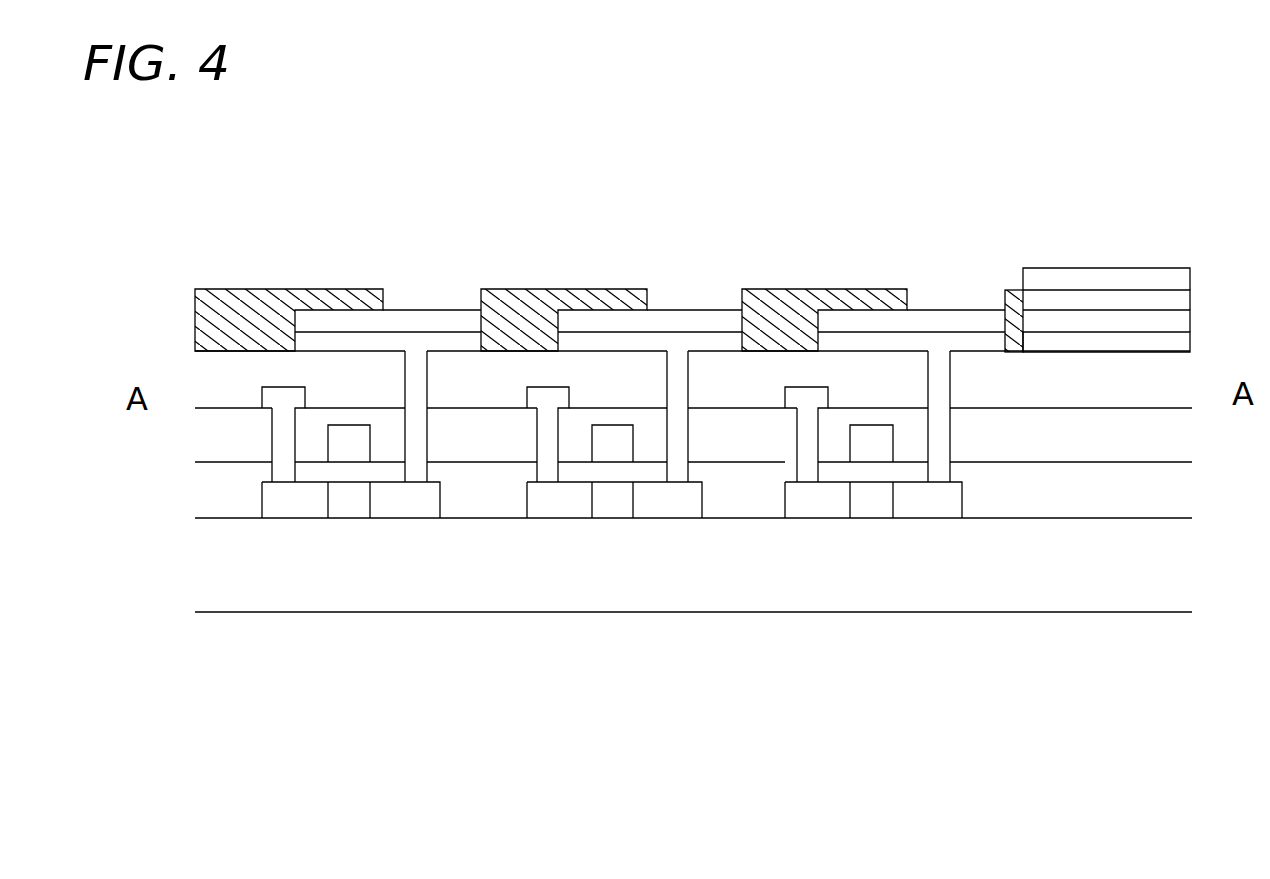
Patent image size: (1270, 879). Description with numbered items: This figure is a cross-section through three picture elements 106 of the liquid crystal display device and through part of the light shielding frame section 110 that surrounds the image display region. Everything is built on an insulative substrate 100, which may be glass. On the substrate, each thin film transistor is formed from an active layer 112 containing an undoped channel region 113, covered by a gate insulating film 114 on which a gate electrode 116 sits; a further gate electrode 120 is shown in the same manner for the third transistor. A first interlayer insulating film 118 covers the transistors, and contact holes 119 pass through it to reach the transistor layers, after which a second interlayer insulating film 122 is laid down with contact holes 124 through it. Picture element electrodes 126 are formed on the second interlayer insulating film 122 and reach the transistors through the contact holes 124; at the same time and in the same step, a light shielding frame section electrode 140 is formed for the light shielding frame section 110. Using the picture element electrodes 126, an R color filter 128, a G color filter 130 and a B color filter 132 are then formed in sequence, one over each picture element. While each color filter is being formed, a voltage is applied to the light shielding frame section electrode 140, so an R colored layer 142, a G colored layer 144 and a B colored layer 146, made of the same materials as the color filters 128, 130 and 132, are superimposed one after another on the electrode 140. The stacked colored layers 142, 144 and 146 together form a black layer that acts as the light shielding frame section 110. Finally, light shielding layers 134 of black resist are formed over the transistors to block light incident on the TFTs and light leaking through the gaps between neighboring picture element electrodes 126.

The insulative substrate 100 is at (867, 595).
The picture elements 106 is at (997, 162).
The light shielding frame section 110 is at (1005, 138).
The active layers 112 is at (408, 505).
The undoped channel regions 113 is at (352, 503).
The gate insulating films 114 is at (577, 470).
The gate electrodes 116 is at (615, 448).
The first interlayer insulating film 118 is at (727, 447).
The contact holes 119 is at (270, 433).
The gate electrode 120 is at (797, 397).
The second interlayer insulating film 122 is at (1073, 388).
The contact holes 124 is at (942, 385).
The picture element electrodes 126 is at (675, 348).
The R color filter 128 is at (445, 320).
The G color filter 130 is at (710, 318).
The B color filter 132 is at (873, 325).
The light shielding layers 134 is at (248, 322).
The light shielding frame section electrode 140 is at (1068, 345).
The R colored layer 142 is at (1088, 327).
The G colored layer 144 is at (1125, 300).
The B colored layer 146 is at (1160, 285).